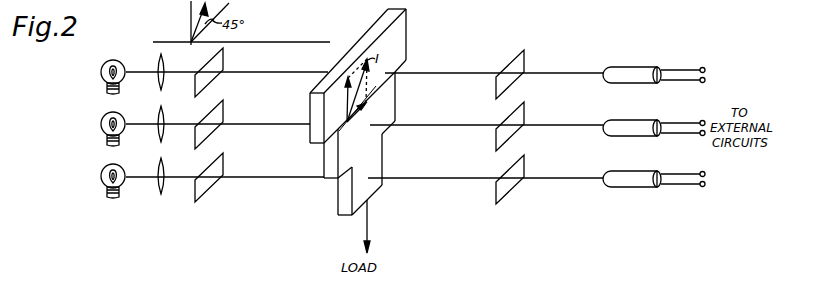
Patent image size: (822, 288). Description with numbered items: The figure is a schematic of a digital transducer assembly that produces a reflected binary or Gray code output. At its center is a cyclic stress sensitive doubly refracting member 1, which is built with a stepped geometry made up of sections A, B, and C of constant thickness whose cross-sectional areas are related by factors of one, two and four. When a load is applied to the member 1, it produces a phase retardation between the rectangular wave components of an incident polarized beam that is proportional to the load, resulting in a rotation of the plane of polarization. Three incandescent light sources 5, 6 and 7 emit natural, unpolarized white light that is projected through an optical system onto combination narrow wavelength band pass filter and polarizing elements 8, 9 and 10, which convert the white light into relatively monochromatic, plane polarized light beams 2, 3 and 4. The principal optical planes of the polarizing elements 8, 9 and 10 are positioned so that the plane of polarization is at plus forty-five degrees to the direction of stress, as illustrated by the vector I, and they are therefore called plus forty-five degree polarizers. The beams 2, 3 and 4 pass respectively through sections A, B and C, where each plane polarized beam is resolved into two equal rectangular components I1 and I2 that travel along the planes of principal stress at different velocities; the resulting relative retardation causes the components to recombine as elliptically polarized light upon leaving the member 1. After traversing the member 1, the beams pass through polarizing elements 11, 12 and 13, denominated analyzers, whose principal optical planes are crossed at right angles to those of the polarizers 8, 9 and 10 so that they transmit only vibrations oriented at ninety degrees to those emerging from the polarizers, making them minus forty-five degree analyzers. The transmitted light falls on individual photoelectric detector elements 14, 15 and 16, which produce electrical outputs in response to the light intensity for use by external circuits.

The cyclic stress sensitive doubly refracting member 1 is at (381, 19).
The plane polarized light beam 2 is at (284, 179).
The plane polarized light beam 3 is at (293, 126).
The plane polarized light beam 4 is at (296, 75).
The incandescent light source 5 is at (102, 169).
The incandescent light source 6 is at (102, 118).
The incandescent light source 7 is at (102, 66).
The combination narrow wavelength band pass filter and polarizing element 8 is at (201, 185).
The combination narrow wavelength band pass filter and polarizing element 9 is at (203, 133).
The combination narrow wavelength band pass filter and polarizing element 10 is at (203, 81).
The analyzer polarizing element 11 is at (505, 188).
The analyzer polarizing element 12 is at (505, 135).
The analyzer polarizing element 13 is at (505, 83).
The photoelectric detector element 14 is at (630, 186).
The photoelectric detector element 15 is at (630, 135).
The photoelectric detector element 16 is at (636, 82).
The section of member A is at (378, 152).
The section of member B is at (390, 95).
The section of member C is at (406, 32).
The vector I is at (200, 16).
The rectangular component I1 is at (346, 98).
The rectangular component I2 is at (356, 103).